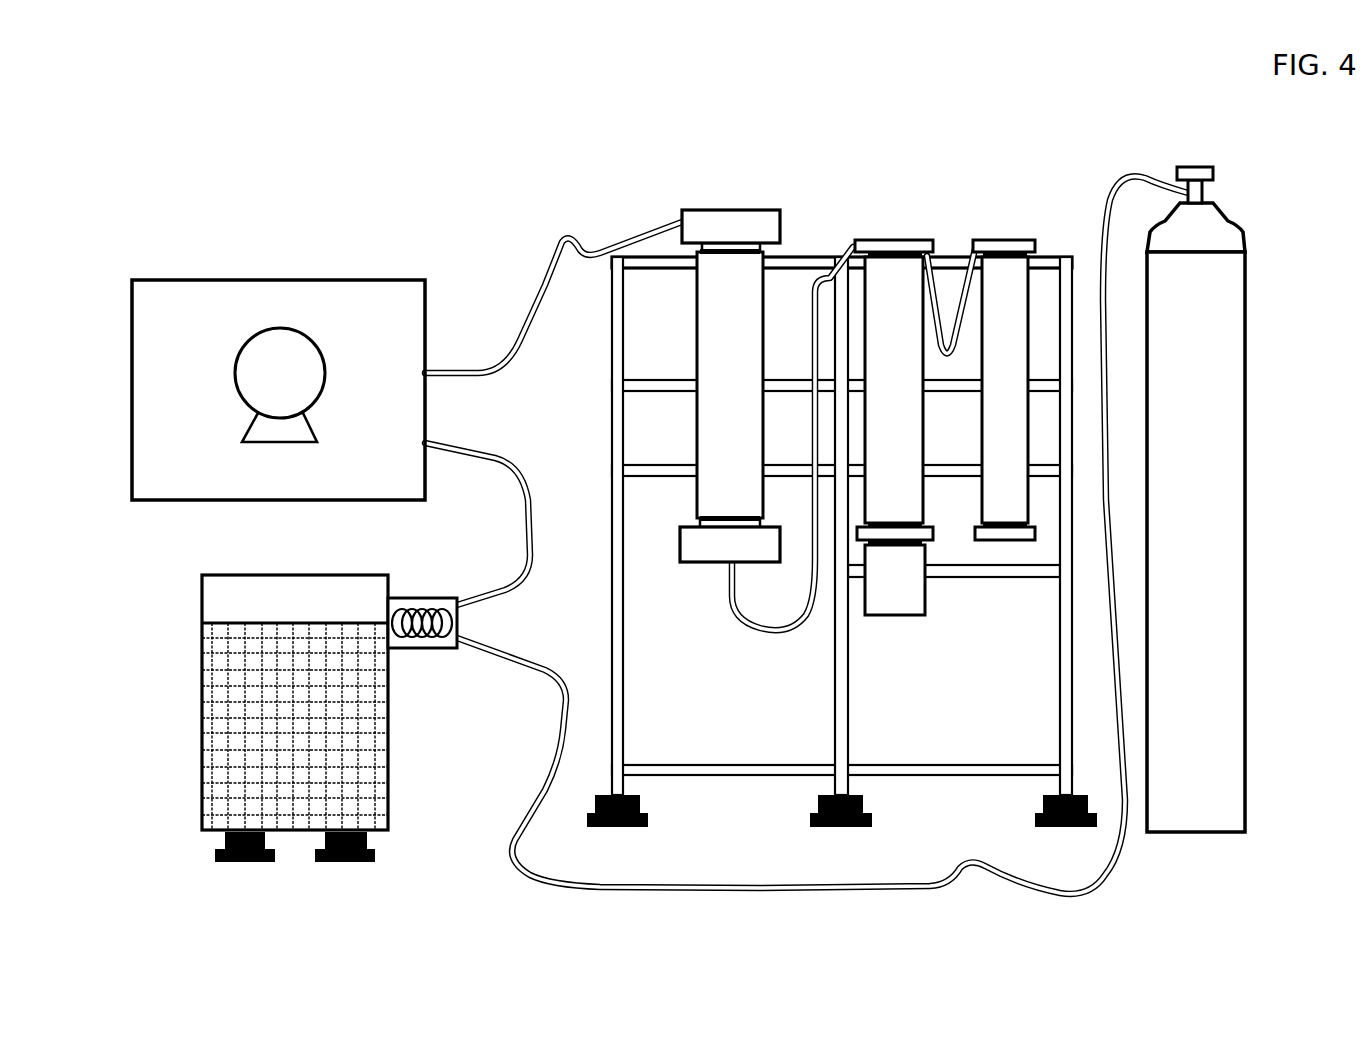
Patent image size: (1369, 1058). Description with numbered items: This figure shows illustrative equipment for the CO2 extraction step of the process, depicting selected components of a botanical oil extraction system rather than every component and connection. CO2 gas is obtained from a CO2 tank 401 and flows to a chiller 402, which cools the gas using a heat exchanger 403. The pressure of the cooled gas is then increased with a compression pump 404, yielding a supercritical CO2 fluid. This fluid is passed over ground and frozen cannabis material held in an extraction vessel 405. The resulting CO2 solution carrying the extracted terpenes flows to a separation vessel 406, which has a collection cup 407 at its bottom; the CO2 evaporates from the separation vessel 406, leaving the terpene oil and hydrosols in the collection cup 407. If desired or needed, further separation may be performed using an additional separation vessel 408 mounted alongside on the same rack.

The CO2 tank 401 is at (1249, 320).
The chiller 402 is at (200, 655).
The heat exchanger 403 is at (422, 648).
The compression pump 404 is at (218, 278).
The extraction vessel 405 is at (722, 210).
The separation vessel 406 is at (893, 238).
The collection cup 407 is at (893, 615).
The separation vessel 408 is at (1013, 238).